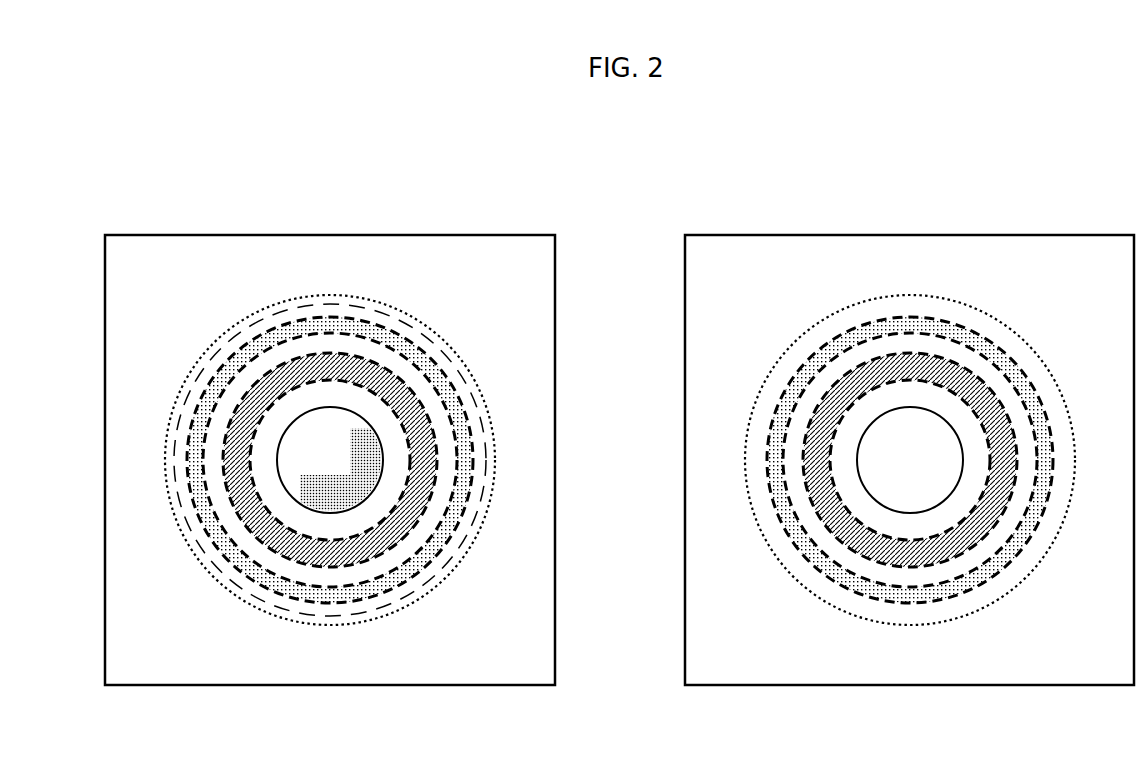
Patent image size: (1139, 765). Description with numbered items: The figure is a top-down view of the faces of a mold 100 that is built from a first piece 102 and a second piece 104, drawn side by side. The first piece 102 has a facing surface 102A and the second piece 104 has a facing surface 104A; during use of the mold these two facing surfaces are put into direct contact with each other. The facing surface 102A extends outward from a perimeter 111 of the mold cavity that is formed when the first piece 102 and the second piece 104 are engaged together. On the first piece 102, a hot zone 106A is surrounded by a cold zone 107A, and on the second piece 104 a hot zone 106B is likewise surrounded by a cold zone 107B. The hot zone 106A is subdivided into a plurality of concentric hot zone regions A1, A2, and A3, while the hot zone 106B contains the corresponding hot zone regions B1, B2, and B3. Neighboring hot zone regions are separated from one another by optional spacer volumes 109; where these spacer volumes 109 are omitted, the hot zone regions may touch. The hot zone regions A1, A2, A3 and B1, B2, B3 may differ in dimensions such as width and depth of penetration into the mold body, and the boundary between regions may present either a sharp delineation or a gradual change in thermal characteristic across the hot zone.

The mold 100 is at (387, 165).
The first piece 102 is at (160, 280).
The facing surface 102A is at (363, 258).
The second piece 104 is at (736, 280).
The facing surface 104A is at (918, 258).
The hot zone 106A is at (446, 336).
The hot zone 106B is at (1025, 336).
The cold zone 107A is at (175, 661).
The cold zone 107B is at (747, 661).
The spacer volumes 109 is at (353, 402).
The perimeter 111 is at (205, 363).
The hot zone region A1 is at (470, 414).
The hot zone region A2 is at (405, 540).
The hot zone region A3 is at (315, 473).
The hot zone region B1 is at (1049, 412).
The hot zone region B2 is at (985, 540).
The hot zone region B3 is at (895, 473).